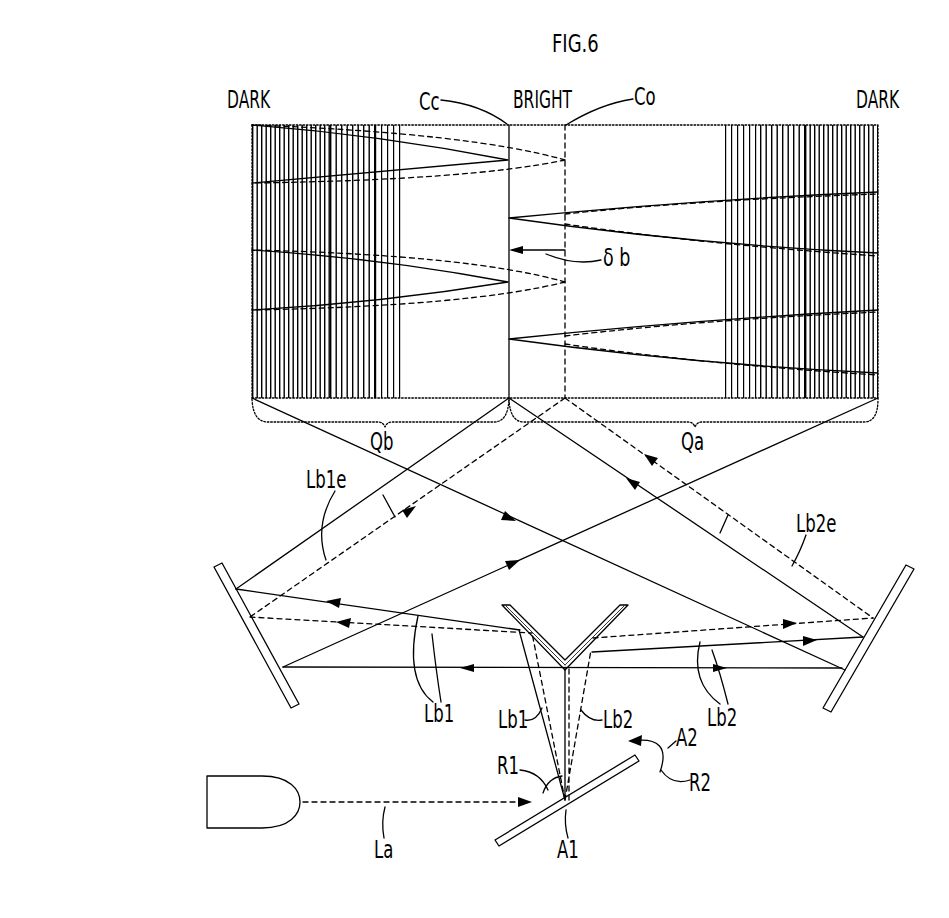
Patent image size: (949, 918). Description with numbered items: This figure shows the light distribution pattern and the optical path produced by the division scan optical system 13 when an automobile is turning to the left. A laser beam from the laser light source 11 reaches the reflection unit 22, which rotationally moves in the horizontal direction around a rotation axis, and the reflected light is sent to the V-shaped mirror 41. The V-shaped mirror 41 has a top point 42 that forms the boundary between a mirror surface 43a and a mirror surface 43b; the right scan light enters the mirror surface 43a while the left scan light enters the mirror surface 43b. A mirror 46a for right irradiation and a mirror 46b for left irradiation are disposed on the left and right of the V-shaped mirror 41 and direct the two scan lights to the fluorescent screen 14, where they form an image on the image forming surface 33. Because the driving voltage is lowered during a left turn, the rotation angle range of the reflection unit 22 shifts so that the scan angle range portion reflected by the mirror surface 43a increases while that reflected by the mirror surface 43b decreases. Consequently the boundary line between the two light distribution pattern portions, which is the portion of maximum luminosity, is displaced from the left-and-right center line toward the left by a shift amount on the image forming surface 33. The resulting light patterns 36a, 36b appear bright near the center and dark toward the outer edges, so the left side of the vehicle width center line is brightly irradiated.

The laser light source 11 is at (240, 774).
The division scan optical system 13 is at (153, 555).
The fluorescent screen 14 is at (208, 268).
The reflection unit 22 is at (617, 778).
The image forming surface 33 is at (881, 149).
The light beam pattern 36a is at (880, 274).
The light beam pattern 36b is at (252, 206).
The V-shaped mirror 41 is at (540, 627).
The top point 42 is at (582, 661).
The mirror surface 43a is at (500, 619).
The mirror surface 43b is at (618, 627).
The mirror for right irradiation 46a is at (250, 632).
The mirror for left irradiation 46b is at (866, 652).